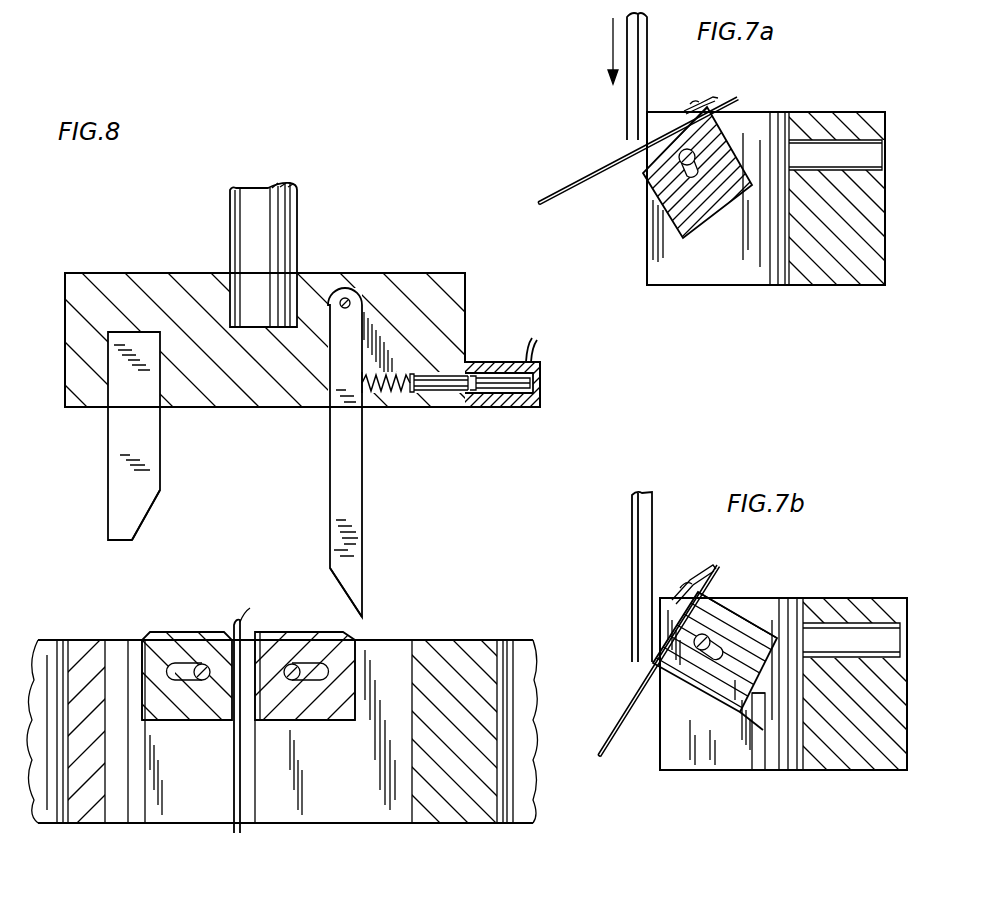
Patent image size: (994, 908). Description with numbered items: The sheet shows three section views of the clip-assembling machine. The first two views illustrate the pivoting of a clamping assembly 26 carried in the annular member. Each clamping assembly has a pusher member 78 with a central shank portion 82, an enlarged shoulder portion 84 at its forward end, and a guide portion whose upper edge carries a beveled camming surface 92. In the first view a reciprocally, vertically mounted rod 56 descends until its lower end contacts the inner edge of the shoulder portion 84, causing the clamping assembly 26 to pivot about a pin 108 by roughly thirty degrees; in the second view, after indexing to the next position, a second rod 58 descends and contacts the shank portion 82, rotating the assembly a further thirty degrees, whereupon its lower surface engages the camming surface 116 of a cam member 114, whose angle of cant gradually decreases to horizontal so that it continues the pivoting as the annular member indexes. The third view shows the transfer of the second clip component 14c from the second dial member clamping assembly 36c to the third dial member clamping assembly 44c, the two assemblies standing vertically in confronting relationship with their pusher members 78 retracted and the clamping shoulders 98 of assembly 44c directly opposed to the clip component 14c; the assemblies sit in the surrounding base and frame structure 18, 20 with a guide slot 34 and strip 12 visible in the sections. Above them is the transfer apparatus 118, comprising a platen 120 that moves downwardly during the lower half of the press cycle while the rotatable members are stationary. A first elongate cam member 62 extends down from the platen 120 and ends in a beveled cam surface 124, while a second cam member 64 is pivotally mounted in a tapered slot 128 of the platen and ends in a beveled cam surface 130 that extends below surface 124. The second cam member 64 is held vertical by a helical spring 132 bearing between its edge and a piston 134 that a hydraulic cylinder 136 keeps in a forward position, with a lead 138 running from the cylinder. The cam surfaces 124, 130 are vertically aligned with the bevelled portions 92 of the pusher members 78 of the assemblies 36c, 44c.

In FIG. 7a, the strip 12 is at (570, 183).
In FIG. 7b, the strip 12 is at (637, 688).
In FIG. 8, the second clip component 14c is at (243, 604).
In FIG. 8, the base member 18 is at (73, 632).
In FIG. 8, the frame member 20 is at (455, 830).
In FIG. 7a, the clamping assembly 26 is at (697, 247).
In FIG. 7b, the clamping assembly 26 is at (778, 618).
In FIG. 7a, the guide slot 34 is at (848, 150).
In FIG. 7b, the guide slot 34 is at (873, 635).
In FIG. 8, the second dial member clamping assembly 36c is at (176, 624).
In FIG. 8, the third dial member clamping assembly 44c is at (380, 640).
In FIG. 7a, the reciprocally, vertically mounted rod 56 is at (647, 67).
In FIG. 7b, the second reciprocally, vertically mounted rod 58 is at (652, 517).
In FIG. 8, the first elongate cam member 62 is at (116, 462).
In FIG. 8, the second cam member 64 is at (362, 503).
In FIG. 8, the pusher member 78 is at (193, 713).
In FIG. 7a, the pusher member 78 is at (720, 188).
In FIG. 7b, the pusher member 78 is at (698, 682).
In FIG. 7b, the central shank portion 82 is at (745, 612).
In FIG. 7a, the enlarged shoulder portion 84 is at (624, 157).
In FIG. 8, the beveled camming surface 92 is at (145, 640).
In FIG. 8, the clamping shoulders 98 is at (255, 637).
In FIG. 7a, the pin 108 is at (712, 110).
In FIG. 7b, the pin 108 is at (714, 606).
In FIG. 7b, the cam member 114 is at (703, 755).
In FIG. 7b, the camming surface 116 is at (755, 730).
In FIG. 8, the transfer apparatus 118 is at (310, 255).
In FIG. 8, the platen 120 is at (453, 285).
In FIG. 8, the beveled cam surface 124 is at (150, 518).
In FIG. 8, the tapered slot 128 is at (392, 400).
In FIG. 8, the beveled cam surface 130 is at (338, 585).
In FIG. 8, the helical spring 132 is at (370, 393).
In FIG. 8, the piston 134 is at (415, 370).
In FIG. 8, the hydraulic cylinder 136 is at (505, 388).
In FIG. 8, the wire 138 is at (538, 345).